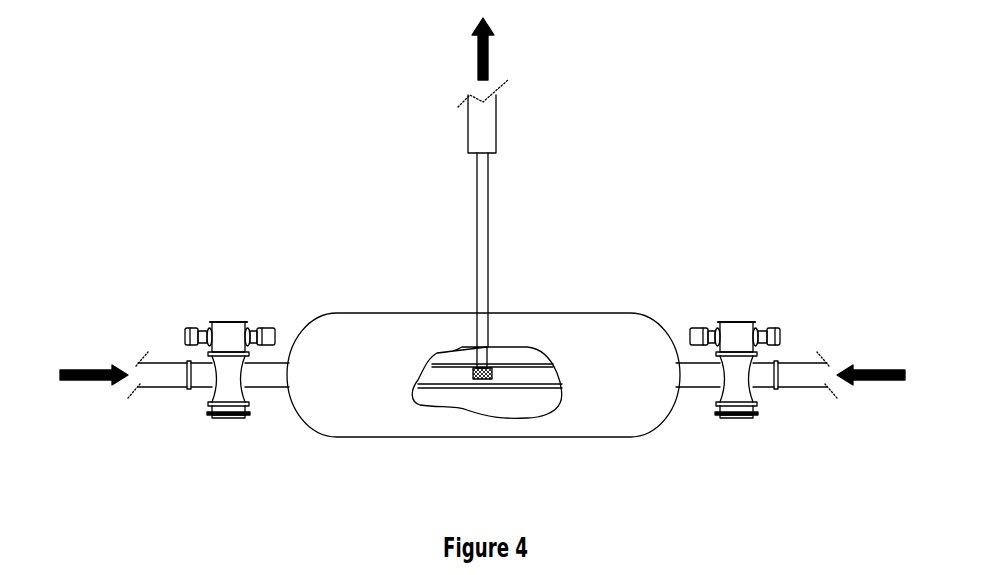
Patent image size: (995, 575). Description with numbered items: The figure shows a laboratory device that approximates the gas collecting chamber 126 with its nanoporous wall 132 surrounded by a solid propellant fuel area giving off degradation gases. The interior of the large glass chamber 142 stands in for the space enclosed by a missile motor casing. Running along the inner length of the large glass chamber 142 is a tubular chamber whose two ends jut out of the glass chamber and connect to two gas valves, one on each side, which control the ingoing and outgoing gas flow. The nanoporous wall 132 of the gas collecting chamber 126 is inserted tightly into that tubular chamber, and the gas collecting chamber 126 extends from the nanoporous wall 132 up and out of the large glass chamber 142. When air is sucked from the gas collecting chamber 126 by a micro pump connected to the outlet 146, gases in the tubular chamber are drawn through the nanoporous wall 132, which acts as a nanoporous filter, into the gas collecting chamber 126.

The gas collecting chamber 126 is at (482, 350).
The nanoporous wall 132 is at (548, 432).
The large glass chamber 142 is at (468, 298).
The outlet 146 is at (529, 85).